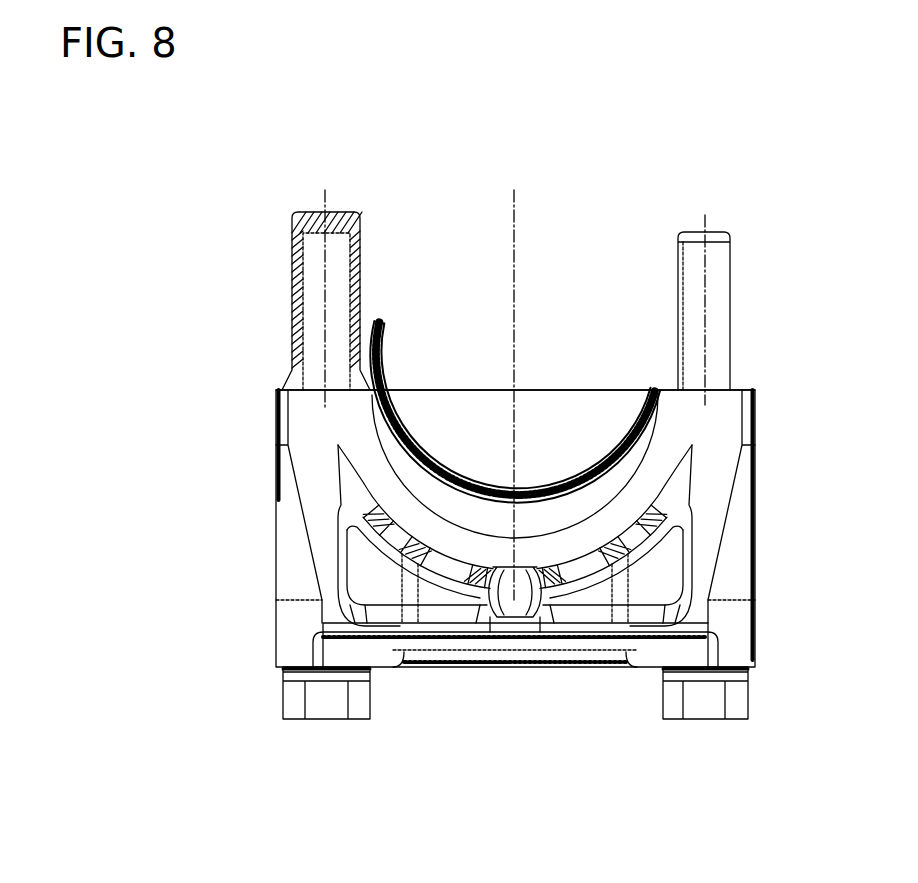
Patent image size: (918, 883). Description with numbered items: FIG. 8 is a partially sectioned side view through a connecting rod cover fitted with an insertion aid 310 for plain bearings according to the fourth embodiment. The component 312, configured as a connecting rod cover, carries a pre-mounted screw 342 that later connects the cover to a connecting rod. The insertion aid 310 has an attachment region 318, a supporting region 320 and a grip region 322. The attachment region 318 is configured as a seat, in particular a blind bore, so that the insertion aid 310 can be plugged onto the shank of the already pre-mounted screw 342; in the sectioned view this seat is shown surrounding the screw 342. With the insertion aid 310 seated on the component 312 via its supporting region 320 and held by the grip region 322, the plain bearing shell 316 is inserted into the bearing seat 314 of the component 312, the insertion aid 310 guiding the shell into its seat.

The insertion aid 310 is at (245, 200).
The component 312 is at (277, 502).
The bearing seat 314 is at (403, 483).
The plain bearing shell 316 is at (382, 367).
The attachment region 318 is at (360, 258).
The supporting region 320 is at (285, 382).
The grip region 322 is at (297, 300).
The screw 342 is at (338, 320).